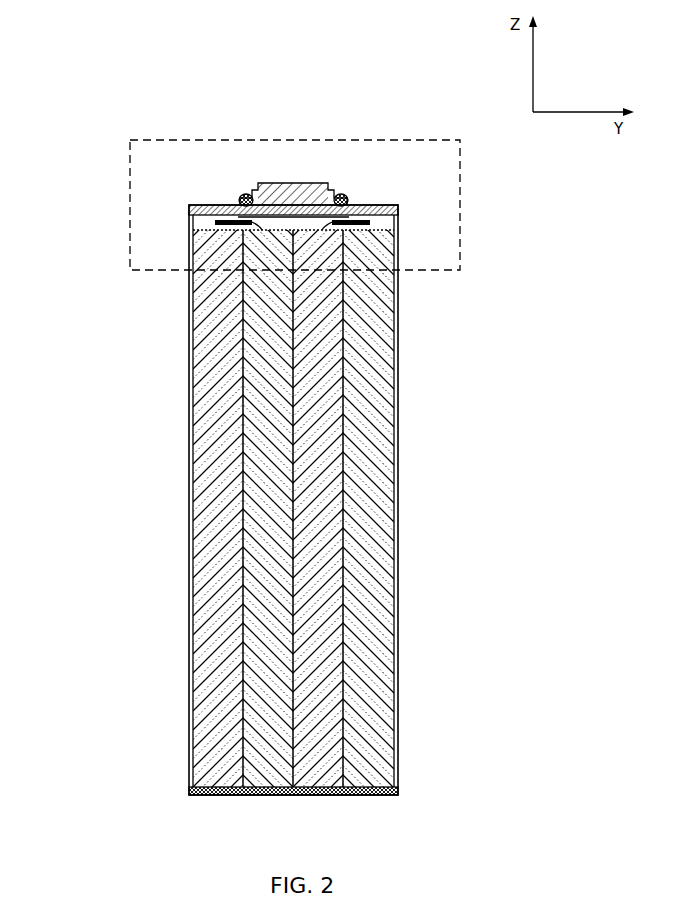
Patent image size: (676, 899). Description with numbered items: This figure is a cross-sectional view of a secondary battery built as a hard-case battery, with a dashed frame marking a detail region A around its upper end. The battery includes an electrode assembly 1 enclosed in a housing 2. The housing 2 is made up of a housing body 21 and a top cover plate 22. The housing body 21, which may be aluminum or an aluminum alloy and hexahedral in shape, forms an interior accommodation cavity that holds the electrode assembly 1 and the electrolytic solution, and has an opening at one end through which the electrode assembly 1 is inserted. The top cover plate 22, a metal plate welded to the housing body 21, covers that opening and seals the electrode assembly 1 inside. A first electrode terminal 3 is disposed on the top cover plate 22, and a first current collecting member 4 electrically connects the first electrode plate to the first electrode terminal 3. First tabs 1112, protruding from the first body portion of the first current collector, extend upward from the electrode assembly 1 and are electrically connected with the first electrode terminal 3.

The electrode assembly 1 is at (198, 670).
The housing 2 is at (466, 434).
The housing body 21 is at (398, 347).
The top cover plate 22 is at (358, 205).
The first electrode terminal 3 is at (277, 184).
The first current collecting member 4 is at (240, 204).
The first tab 1112 is at (216, 222).
The enlarged region A is at (124, 134).